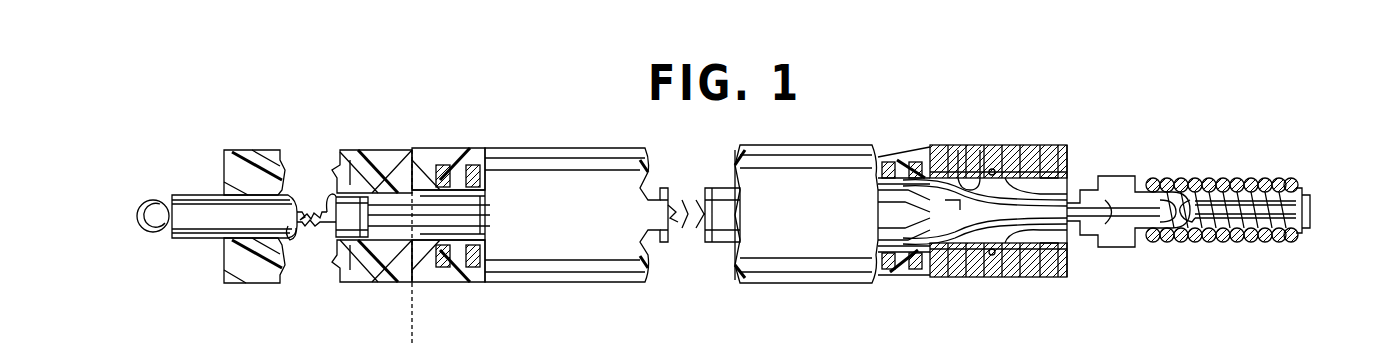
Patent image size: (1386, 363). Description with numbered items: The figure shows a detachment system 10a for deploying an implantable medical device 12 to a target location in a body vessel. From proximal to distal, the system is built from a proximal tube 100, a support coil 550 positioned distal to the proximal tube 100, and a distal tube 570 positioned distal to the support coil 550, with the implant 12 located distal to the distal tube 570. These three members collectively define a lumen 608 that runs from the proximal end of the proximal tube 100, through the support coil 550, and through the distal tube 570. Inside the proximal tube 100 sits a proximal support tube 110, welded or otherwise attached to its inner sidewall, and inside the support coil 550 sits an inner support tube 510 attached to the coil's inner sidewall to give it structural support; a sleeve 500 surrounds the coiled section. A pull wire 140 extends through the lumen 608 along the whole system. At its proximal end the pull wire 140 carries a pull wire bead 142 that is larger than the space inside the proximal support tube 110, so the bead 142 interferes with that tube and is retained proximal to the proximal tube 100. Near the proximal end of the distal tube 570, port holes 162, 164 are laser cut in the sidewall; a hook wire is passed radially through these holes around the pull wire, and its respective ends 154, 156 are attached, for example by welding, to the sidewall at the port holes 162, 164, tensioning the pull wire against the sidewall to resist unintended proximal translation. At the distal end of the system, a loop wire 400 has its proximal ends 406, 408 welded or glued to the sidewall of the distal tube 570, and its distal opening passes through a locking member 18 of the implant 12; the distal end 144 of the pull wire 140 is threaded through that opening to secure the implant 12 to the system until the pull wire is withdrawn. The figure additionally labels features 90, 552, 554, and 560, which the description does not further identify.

The detachment system 10a is at (793, 128).
The implantable medical device 12 is at (1268, 181).
The locking member 18 is at (1128, 242).
The housing 90 is at (400, 265).
The proximal tube 100 is at (236, 258).
The proximal support tube 110 is at (197, 200).
The pull wire 140 is at (326, 222).
The pull wire bead 142 is at (148, 220).
The distal end of pull wire 144 is at (1150, 186).
The hook wire end 154 is at (880, 188).
The hook wire end 156 is at (972, 199).
The port hole 162 is at (965, 180).
The port hole 164 is at (990, 170).
The loop wire 400 is at (1076, 245).
The proximal end of loop wire 406 is at (1010, 147).
The proximal end of loop wire 408 is at (1022, 280).
The sleeve 500 is at (447, 270).
The inner support tube 510 is at (625, 230).
The support coil 550 is at (930, 285).
The housing section 552 is at (426, 160).
The seal 554 is at (900, 272).
The O-ring 560 is at (478, 166).
The distal tube 570 is at (1048, 281).
The lumen 608 is at (358, 162).